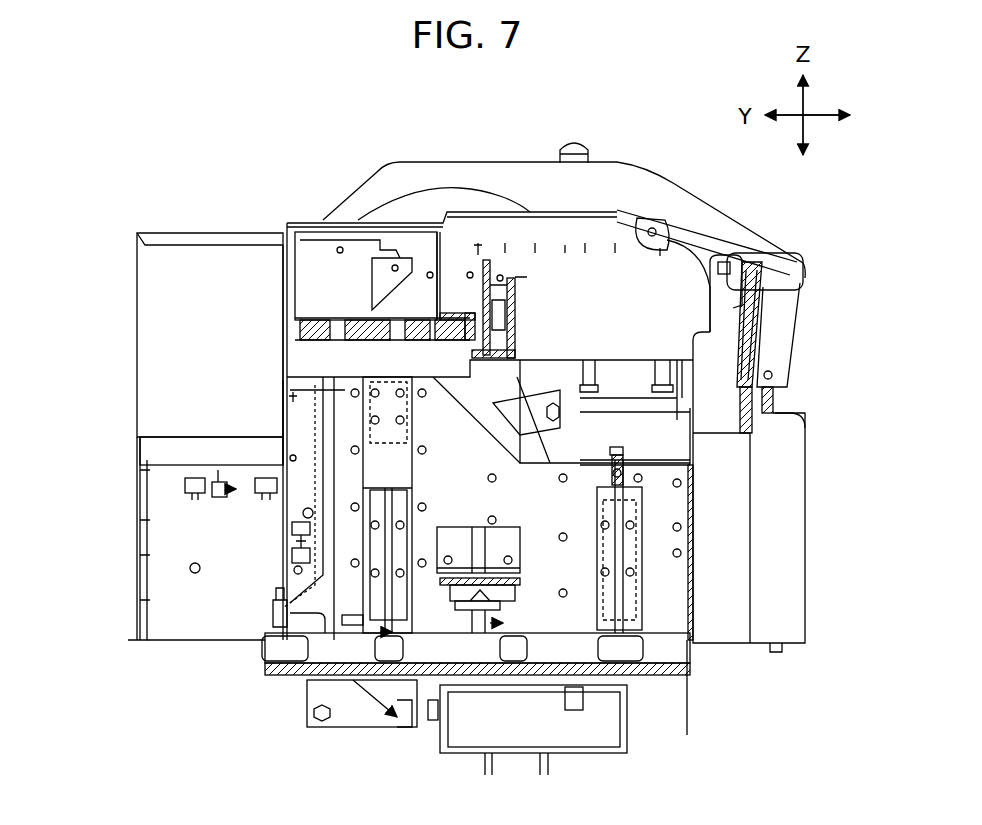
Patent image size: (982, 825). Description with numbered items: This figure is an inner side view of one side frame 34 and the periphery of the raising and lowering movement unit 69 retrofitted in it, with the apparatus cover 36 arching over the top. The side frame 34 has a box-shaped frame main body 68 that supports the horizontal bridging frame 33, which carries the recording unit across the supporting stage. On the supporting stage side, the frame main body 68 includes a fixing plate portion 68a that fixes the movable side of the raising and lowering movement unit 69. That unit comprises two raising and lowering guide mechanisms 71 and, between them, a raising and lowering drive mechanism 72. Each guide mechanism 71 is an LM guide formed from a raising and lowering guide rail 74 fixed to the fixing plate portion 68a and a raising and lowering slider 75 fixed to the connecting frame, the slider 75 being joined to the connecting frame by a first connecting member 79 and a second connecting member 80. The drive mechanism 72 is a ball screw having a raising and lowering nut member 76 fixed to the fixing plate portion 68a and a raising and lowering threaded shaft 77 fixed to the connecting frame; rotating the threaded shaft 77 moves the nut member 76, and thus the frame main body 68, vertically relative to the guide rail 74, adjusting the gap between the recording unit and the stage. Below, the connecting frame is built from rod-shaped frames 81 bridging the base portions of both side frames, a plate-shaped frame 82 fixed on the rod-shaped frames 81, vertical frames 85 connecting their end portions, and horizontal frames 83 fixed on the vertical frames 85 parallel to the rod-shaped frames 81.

The horizontal bridging frame 33 is at (515, 305).
The side frame 34 is at (98, 535).
The apparatus cover 36 is at (680, 200).
The frame main body 68 is at (116, 510).
The fixing plate portion 68a is at (340, 443).
The raising and lowering movement unit 69 is at (272, 557).
The raising and lowering guide mechanism 71 is at (388, 668).
The raising and lowering drive mechanism 72 is at (492, 635).
The raising and lowering guide rail 74 is at (360, 605).
The raising and lowering slider 75 is at (360, 400).
The raising and lowering nut member 76 is at (510, 593).
The raising and lowering threaded shaft 77 is at (478, 548).
The first connecting member 79 is at (355, 393).
The second connecting member 80 is at (360, 550).
The rod-shaped frame 81 is at (265, 650).
The plate-shaped frame 82 is at (350, 675).
The horizontal frame 83 is at (403, 650).
The vertical frame 85 is at (407, 683).